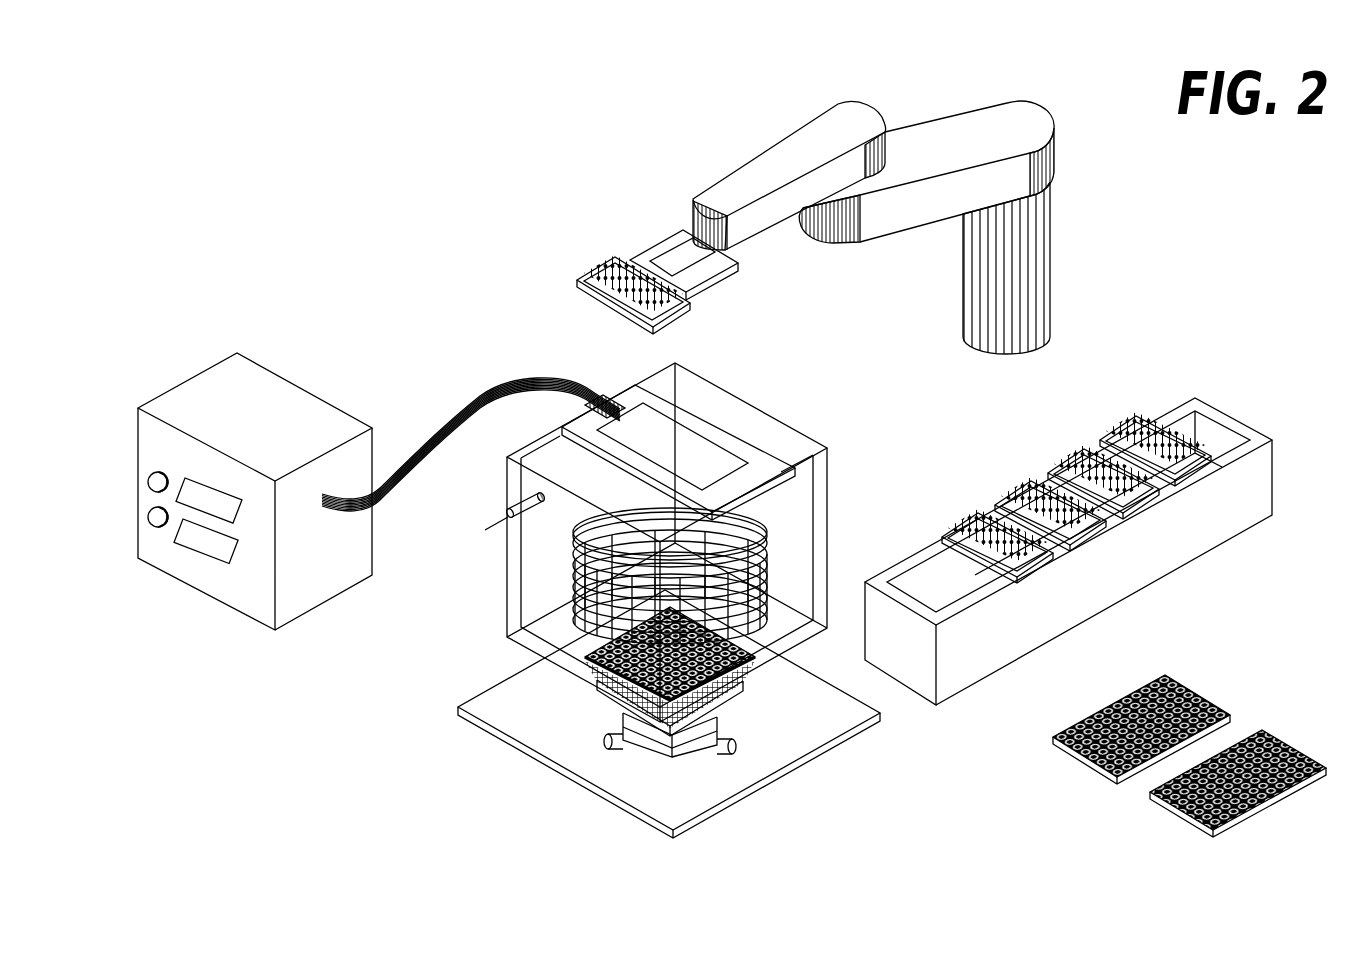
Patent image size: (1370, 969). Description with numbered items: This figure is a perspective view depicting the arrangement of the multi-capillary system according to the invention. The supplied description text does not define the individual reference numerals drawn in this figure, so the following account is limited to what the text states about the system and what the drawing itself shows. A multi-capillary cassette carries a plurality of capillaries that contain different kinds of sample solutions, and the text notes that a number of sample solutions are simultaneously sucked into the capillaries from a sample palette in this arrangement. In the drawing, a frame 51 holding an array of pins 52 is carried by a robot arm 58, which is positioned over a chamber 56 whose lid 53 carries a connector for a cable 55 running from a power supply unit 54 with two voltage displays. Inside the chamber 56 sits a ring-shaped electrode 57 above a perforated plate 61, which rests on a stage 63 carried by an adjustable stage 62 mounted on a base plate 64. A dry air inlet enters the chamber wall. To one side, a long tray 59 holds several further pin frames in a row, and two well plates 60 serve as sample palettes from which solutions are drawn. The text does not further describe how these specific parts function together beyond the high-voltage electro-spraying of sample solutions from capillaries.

The sample plate frame 51 is at (675, 308).
The pin array 52 is at (617, 255).
The chamber lid with connector 53 is at (618, 400).
The high voltage power supply 54 is at (197, 392).
The cable 55 is at (468, 412).
The chamber 56 is at (520, 562).
The ring electrode 57 is at (578, 593).
The robot arm 58 is at (765, 158).
The plate tray 59 is at (1215, 412).
The microplate 60 is at (1278, 732).
The perforated electrode plate 61 is at (594, 675).
The XY stage 62 is at (620, 687).
The stage plate 63 is at (727, 700).
The base plate 64 is at (727, 770).